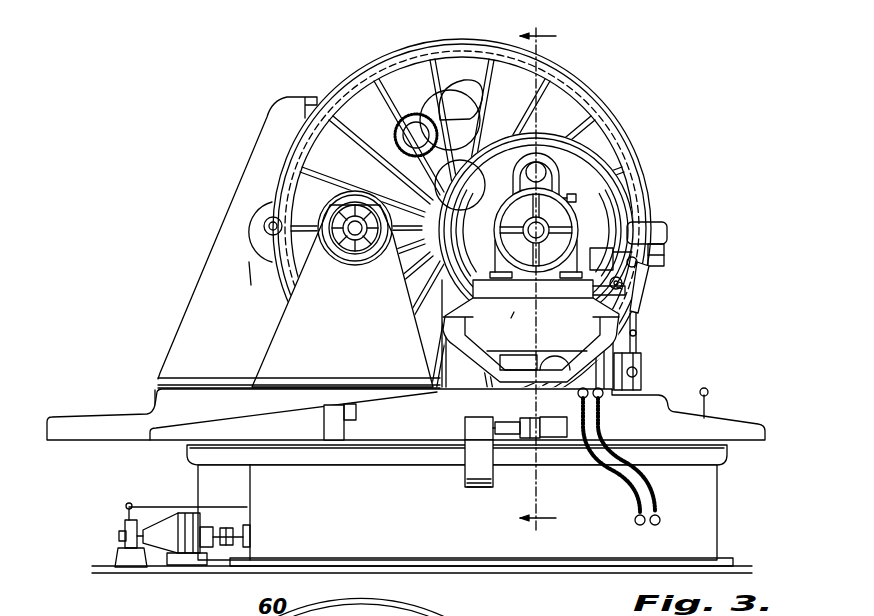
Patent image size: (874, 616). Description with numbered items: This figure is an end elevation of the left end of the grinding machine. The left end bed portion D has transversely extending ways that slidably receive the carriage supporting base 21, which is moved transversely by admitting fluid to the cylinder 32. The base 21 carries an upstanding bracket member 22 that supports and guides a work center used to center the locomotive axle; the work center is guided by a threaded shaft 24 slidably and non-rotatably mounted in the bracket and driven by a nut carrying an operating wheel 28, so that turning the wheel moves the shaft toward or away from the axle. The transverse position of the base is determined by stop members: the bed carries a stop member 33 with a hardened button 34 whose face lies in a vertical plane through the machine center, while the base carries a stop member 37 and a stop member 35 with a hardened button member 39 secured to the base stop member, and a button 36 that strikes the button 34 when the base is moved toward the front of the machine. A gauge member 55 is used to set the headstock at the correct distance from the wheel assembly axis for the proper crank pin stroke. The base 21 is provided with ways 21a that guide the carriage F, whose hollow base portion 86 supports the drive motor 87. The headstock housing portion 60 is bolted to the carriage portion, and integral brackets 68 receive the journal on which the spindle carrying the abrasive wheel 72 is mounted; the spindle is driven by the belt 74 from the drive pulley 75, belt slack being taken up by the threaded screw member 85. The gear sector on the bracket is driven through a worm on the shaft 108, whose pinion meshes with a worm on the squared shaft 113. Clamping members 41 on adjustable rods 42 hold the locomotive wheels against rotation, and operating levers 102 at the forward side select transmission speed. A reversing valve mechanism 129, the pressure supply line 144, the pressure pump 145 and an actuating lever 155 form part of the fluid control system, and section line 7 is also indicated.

The abrasive wheel 72 is at (397, 103).
The cylinder 32 is at (463, 112).
The housing portion 60 is at (593, 151).
The integral brackets 68 is at (563, 190).
The threaded screw member 85 is at (580, 198).
The shaft 108 is at (612, 232).
The clamping members 41 is at (668, 244).
The operating levers 102 is at (665, 256).
The squared shaft 113 is at (650, 279).
The adjustable rods 42 is at (640, 300).
The reversing valve mechanism 129 is at (643, 374).
The actuating lever 155 is at (706, 396).
The carriage supporting base 21 is at (744, 432).
The ways 21a is at (608, 308).
The hollow base portion 86 is at (503, 329).
The drive motor 87 is at (503, 199).
The operating wheel 28 is at (332, 196).
The upstanding bracket member 22 is at (240, 178).
The threaded shaft 24 is at (265, 224).
The stop member 35 is at (322, 423).
The button 36 is at (357, 410).
The hardened button 34 is at (463, 428).
The hardened button member 39 is at (500, 421).
The stop member 33 is at (462, 475).
The gauge member 55 is at (502, 462).
The stop member 37 is at (550, 463).
The section line 7 is at (549, 279).
The pressure supply line 144 is at (140, 507).
The pressure pump 145 is at (123, 543).
The drive pulley 75 is at (330, 592).
The belt 74 is at (430, 600).
The carriage F is at (533, 333).
The left end bed portion D is at (422, 509).